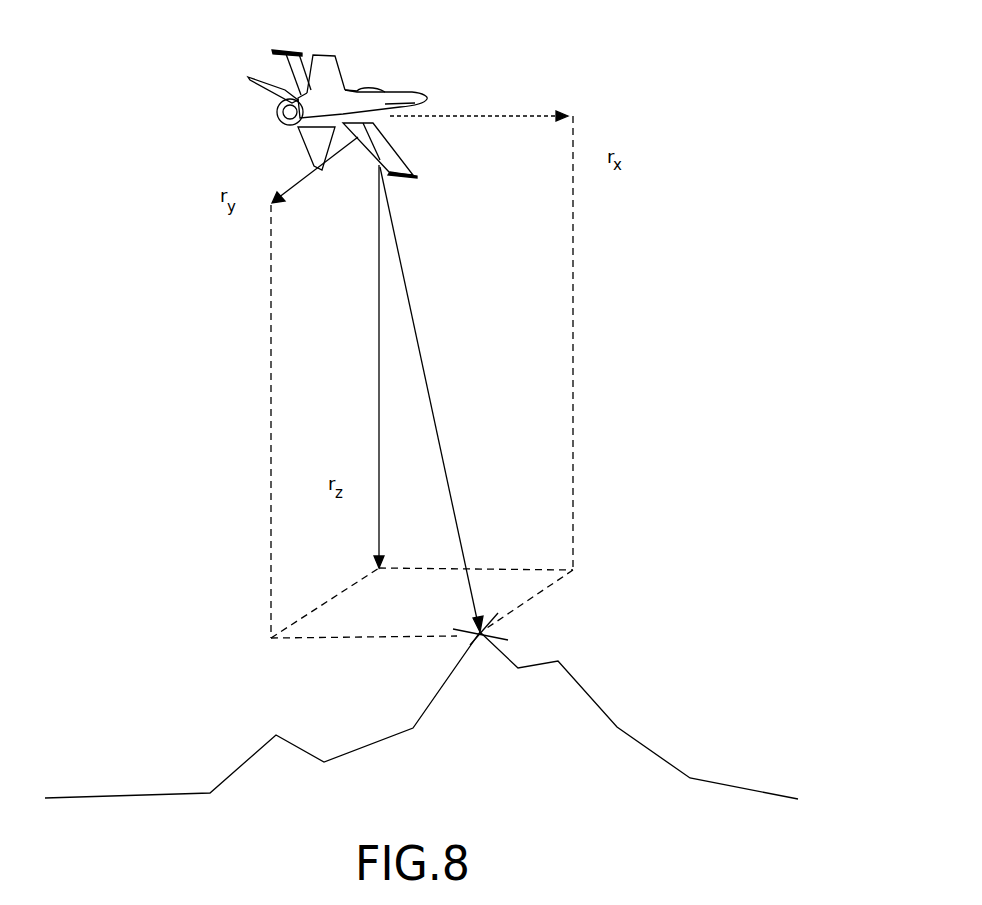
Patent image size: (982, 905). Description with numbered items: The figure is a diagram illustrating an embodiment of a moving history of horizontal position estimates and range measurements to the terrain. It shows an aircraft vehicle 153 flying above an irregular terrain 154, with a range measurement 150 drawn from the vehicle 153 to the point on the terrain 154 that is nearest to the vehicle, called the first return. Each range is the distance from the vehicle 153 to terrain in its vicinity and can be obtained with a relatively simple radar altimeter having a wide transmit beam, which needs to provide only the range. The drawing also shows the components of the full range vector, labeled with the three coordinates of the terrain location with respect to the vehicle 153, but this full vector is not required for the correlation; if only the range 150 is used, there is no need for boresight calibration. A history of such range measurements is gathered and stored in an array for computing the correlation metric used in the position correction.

The vehicle 153 is at (384, 89).
The range measurement 150 is at (437, 423).
The terrain 154 is at (618, 724).